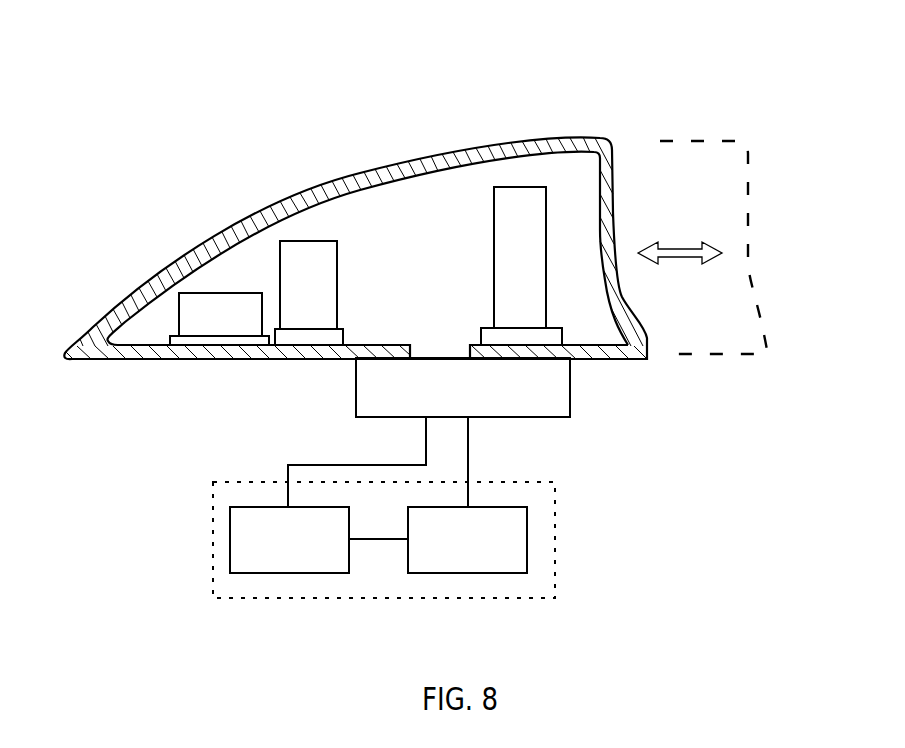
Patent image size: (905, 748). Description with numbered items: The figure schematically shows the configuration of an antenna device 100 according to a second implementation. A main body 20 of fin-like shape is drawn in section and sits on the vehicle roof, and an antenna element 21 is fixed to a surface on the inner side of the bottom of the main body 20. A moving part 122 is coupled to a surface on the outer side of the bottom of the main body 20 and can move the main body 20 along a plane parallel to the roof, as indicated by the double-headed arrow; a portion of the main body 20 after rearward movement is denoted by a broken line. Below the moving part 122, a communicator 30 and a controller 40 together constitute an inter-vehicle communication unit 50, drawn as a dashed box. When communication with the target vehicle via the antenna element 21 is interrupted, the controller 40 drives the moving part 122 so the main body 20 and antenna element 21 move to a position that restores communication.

The antenna device 100 is at (413, 90).
The main body 20 is at (347, 175).
The antenna element 21 is at (520, 187).
The moving part 122 is at (570, 390).
The communicator 30 is at (288, 573).
The controller 40 is at (467, 573).
The inter-vehicle communication unit 50 is at (543, 598).